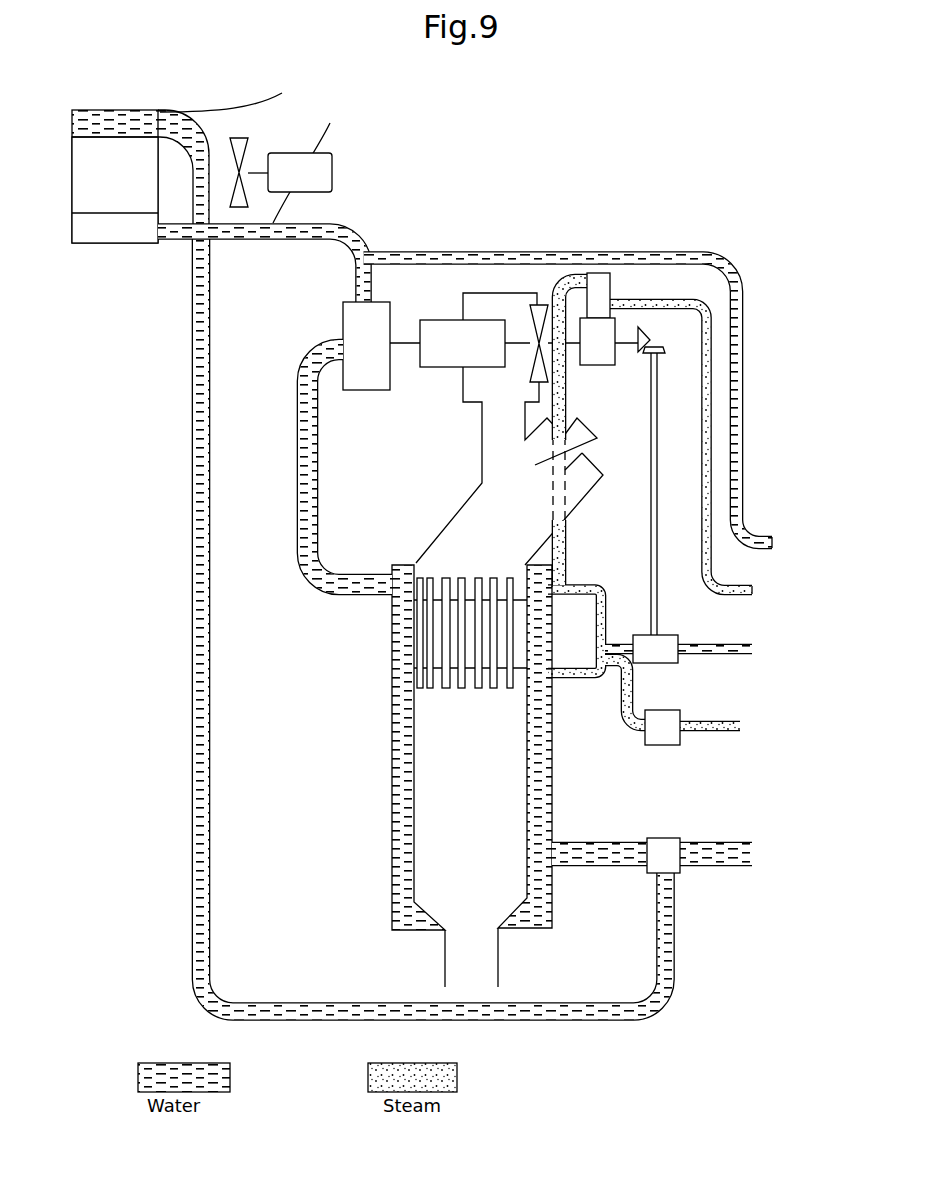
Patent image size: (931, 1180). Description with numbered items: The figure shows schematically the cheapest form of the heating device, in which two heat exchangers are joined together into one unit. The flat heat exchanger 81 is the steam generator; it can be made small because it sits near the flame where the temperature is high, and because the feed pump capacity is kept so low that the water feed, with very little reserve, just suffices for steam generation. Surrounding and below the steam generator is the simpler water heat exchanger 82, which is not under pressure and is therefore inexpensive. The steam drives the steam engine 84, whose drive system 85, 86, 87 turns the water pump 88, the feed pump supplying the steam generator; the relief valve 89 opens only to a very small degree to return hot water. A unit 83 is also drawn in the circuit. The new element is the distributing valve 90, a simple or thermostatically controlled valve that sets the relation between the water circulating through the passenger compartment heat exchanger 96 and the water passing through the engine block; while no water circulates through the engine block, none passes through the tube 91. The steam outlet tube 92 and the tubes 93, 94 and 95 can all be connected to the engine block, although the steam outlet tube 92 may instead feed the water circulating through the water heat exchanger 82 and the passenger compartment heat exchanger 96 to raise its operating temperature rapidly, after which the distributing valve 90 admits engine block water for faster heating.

The flat heat exchanger 81 is at (447, 638).
The water heat exchanger 82 is at (392, 767).
The control unit 83 is at (343, 322).
The steam engine 84 is at (595, 273).
The drive system 85 is at (650, 337).
The drive system 86 is at (665, 350).
The drive system 87 is at (657, 412).
The water pump 88 is at (678, 640).
The relief valve 89 is at (680, 738).
The distributing valve 90 is at (683, 870).
The tube 91 is at (742, 455).
The steam outlet tube 92 is at (765, 540).
The tube 93 is at (750, 585).
The tube 94 is at (717, 652).
The tube 95 is at (713, 730).
The passenger compartment heat exchanger 96 is at (109, 108).